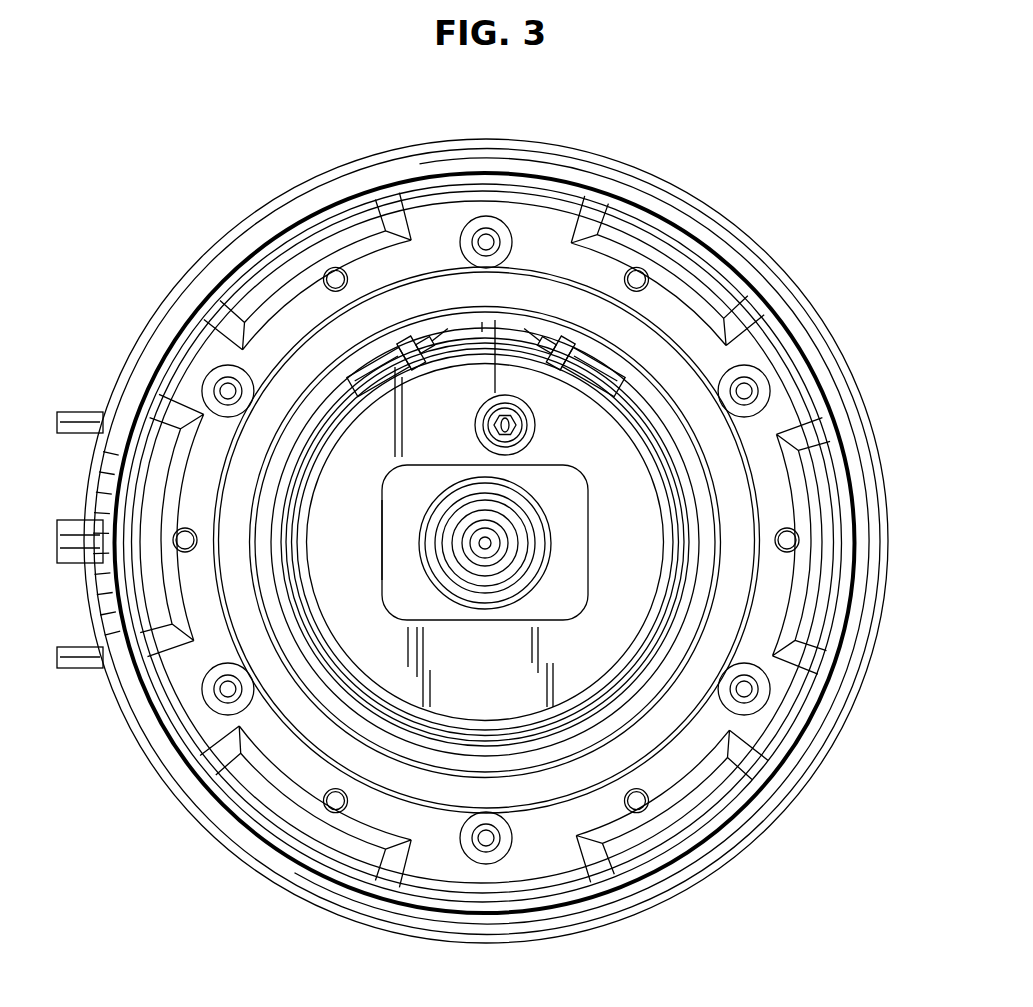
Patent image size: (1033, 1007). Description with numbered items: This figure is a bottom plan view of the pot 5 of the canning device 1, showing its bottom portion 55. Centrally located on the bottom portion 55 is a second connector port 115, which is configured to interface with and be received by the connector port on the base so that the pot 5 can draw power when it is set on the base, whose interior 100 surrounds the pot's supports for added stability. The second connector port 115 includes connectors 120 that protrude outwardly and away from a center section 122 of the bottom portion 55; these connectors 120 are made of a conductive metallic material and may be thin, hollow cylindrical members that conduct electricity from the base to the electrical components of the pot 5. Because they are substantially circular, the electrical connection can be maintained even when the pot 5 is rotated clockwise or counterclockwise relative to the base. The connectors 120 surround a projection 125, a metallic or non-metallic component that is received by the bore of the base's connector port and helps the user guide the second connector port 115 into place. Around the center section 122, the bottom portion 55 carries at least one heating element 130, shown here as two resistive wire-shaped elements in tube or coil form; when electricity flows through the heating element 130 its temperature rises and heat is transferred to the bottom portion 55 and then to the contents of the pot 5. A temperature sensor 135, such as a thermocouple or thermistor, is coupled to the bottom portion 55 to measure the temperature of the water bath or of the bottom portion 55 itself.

The canning device 1 is at (170, 239).
The pot 5 is at (215, 852).
The bottom portion 55 is at (907, 518).
The interior 100 is at (458, 640).
The second connector port 115 is at (398, 537).
The connectors 120 is at (457, 558).
The center section 122 is at (404, 494).
The projection 125 is at (513, 507).
The heating element 130 is at (515, 580).
The temperature sensor 135 is at (514, 398).